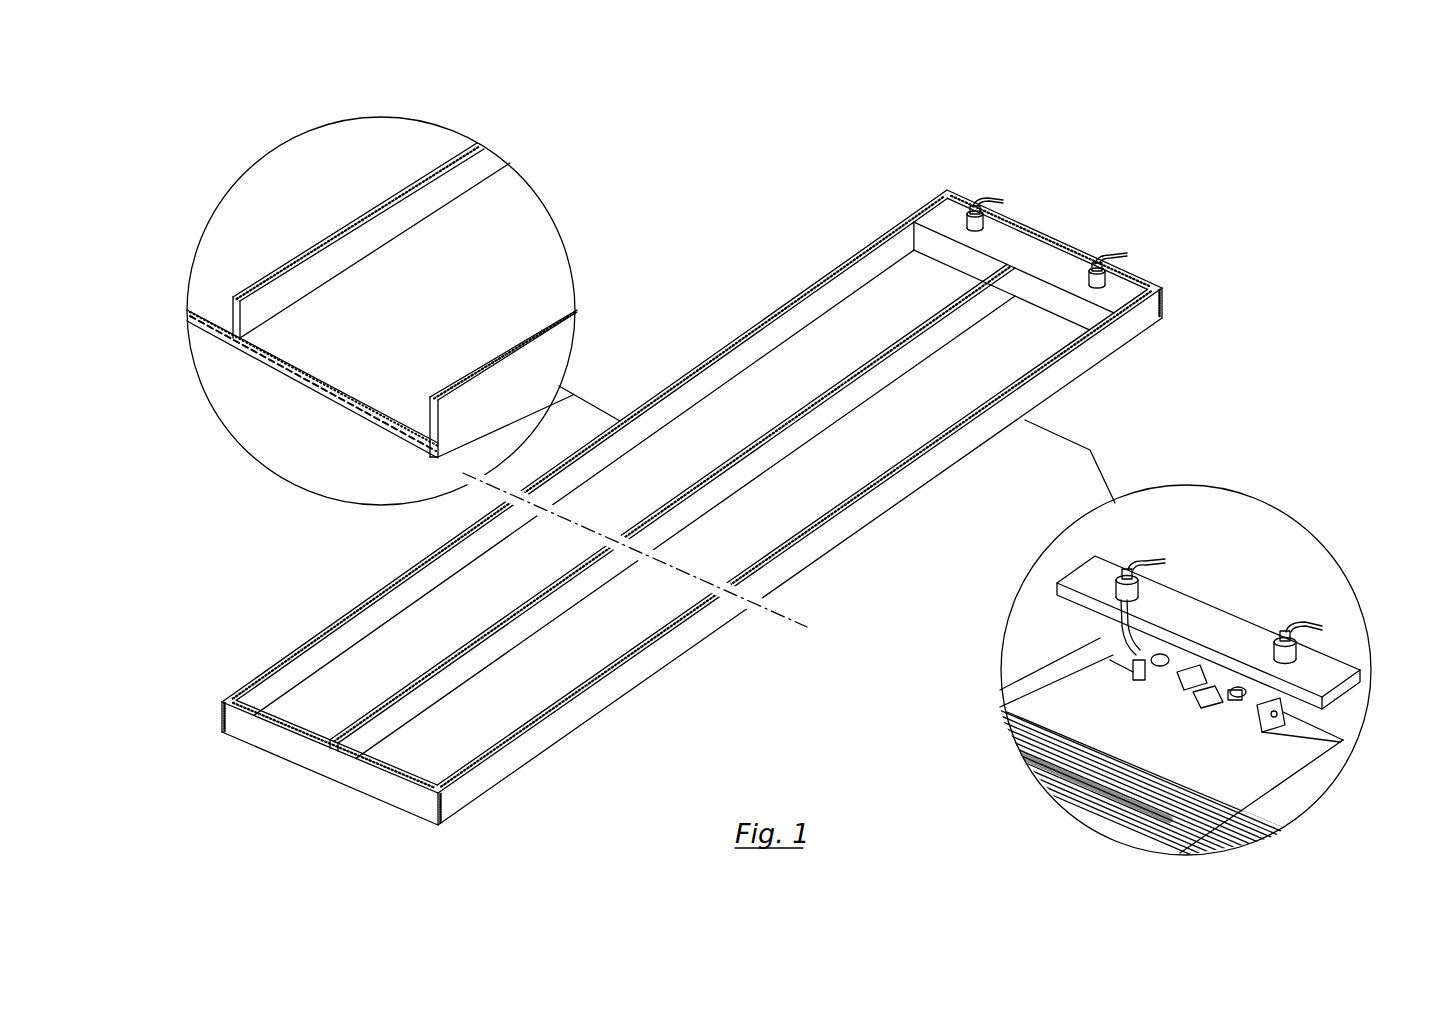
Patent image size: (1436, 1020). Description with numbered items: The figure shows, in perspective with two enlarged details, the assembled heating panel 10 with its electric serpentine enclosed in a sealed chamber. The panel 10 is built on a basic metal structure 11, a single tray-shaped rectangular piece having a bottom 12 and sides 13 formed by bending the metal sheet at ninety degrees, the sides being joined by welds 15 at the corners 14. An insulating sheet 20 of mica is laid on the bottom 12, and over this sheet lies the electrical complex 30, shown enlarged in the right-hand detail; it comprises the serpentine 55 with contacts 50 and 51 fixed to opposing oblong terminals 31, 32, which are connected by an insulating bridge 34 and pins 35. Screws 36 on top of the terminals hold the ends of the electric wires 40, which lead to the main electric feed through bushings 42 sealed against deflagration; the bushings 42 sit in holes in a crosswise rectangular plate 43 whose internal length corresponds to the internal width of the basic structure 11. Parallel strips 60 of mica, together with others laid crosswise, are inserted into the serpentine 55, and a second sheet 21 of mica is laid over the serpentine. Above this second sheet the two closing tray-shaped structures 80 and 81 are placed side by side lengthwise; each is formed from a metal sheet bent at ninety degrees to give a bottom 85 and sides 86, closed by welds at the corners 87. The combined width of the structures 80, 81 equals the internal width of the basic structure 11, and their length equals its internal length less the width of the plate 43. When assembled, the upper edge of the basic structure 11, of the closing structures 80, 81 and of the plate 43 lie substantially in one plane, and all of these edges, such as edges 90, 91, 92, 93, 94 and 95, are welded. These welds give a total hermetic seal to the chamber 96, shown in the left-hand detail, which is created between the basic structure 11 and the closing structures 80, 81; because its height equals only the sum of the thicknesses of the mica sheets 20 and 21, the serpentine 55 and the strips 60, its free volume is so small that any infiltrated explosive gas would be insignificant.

The panel 10 is at (907, 533).
The basic metal structure 11 is at (606, 690).
The bottom 12 is at (918, 408).
The sides 13 is at (683, 637).
The corners 14 is at (236, 715).
The welds 15 is at (222, 722).
The insulating sheet 20 is at (393, 427).
The second sheet 21 is at (377, 403).
The electrical complex 30 is at (1027, 252).
The oblong terminal 31 is at (1130, 662).
The oblong terminal 32 is at (1288, 728).
The insulating bridge 34 is at (1203, 695).
The pins 35 is at (1193, 672).
The screws 36 is at (1143, 667).
The electric wires 40 is at (1000, 200).
The bushings 42 is at (1108, 287).
The crosswise rectangular plate 43 is at (1078, 238).
The contact 50 is at (1133, 657).
The contact 51 is at (1287, 730).
The serpentine 55 is at (310, 392).
The parallel strip 60 is at (1045, 786).
The closing tray-shaped structure 80 is at (980, 383).
The closing tray-shaped structure 81 is at (636, 474).
The bottom 85 is at (800, 503).
The sides 86 is at (360, 622).
The corners 87 is at (238, 695).
The edge 90 is at (962, 196).
The edge 91 is at (793, 294).
The edge 92 is at (749, 448).
The edge 93 is at (1060, 365).
The edge 94 is at (350, 747).
The edge 95 is at (931, 225).
The chamber 96 is at (190, 316).